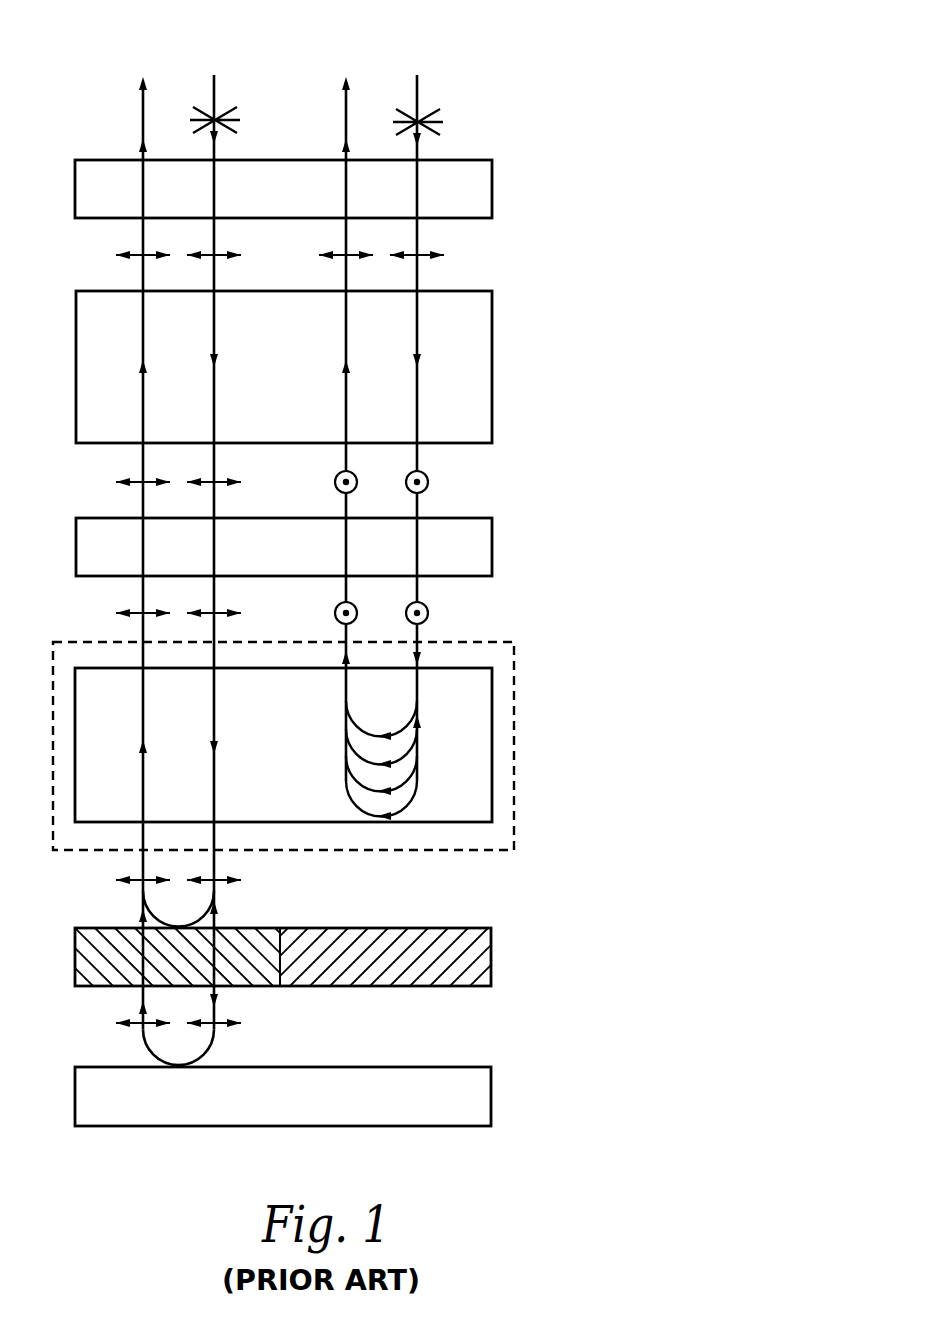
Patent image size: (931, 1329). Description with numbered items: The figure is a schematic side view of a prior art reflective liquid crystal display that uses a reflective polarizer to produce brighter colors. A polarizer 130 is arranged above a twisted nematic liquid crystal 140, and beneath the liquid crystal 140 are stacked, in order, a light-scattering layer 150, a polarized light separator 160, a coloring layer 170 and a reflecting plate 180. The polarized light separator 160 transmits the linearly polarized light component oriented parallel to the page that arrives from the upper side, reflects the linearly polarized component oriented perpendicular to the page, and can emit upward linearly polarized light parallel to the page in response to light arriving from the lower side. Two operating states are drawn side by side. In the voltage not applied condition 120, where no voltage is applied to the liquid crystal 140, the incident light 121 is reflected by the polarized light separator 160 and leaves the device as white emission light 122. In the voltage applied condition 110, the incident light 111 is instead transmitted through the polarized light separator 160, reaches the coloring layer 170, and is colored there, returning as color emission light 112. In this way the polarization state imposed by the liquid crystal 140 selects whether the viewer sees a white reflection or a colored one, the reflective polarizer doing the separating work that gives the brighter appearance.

The voltage applied condition 110 is at (178, 532).
The incident light 111 is at (172, 88).
The color emission light 112 is at (143, 122).
The voltage not applied condition 120 is at (381, 410).
The incident light 121 is at (417, 100).
The white emission light 122 is at (346, 122).
The polarizer 130 is at (492, 192).
The twisted nematic liquid crystal 140 is at (492, 367).
The light-scattering layer 150 is at (492, 548).
The polarized light separator 160 is at (514, 752).
The coloring layer 170 is at (491, 955).
The reflecting plate 180 is at (491, 1100).